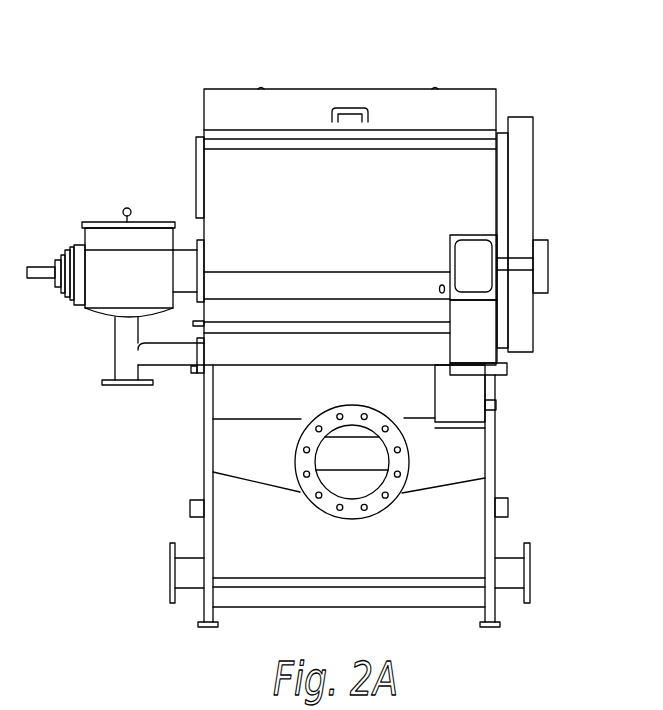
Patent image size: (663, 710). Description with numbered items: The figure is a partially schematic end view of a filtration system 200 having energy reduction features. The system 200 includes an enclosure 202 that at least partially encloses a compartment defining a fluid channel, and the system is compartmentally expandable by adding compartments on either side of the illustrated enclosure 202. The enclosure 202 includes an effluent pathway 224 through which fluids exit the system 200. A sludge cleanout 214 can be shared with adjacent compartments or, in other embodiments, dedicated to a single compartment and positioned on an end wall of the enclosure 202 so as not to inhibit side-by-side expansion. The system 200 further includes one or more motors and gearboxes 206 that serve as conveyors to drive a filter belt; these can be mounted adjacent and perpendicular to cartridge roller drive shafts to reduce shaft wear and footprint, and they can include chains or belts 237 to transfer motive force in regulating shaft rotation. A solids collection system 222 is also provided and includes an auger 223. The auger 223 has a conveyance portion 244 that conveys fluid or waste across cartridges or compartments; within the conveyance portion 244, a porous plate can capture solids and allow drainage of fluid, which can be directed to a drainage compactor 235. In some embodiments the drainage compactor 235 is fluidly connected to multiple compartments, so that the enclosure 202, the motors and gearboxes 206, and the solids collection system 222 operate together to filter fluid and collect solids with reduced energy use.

The filtration system 200 is at (522, 97).
The enclosure 202 is at (266, 172).
The motors and gearboxes 206 is at (470, 397).
The sludge cleanout 214 is at (157, 573).
The solids collection system 222 is at (125, 182).
The auger 223 is at (112, 262).
The effluent pathway 224 is at (328, 460).
The drainage compactor 235 is at (135, 355).
The chains or belts 237 is at (518, 167).
The conveyance portion 244 is at (188, 262).